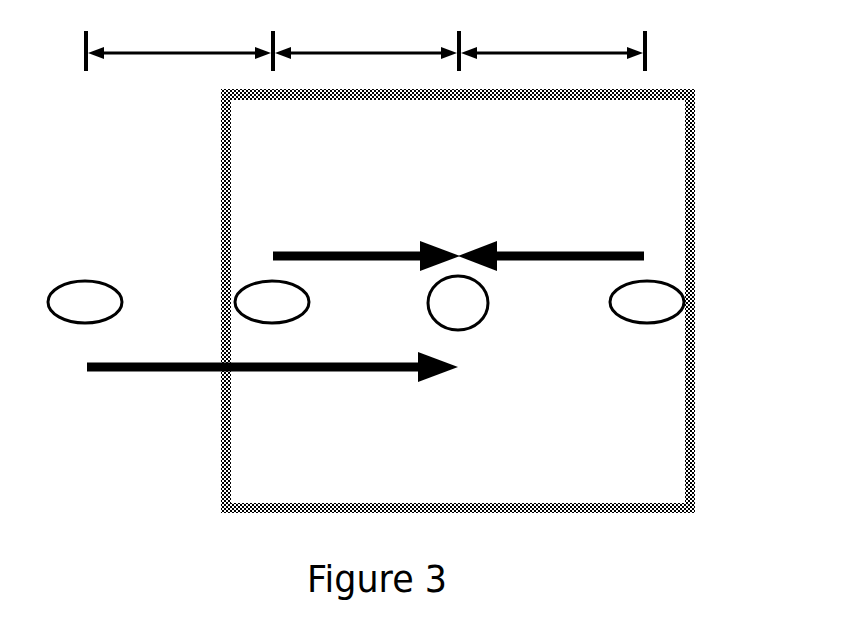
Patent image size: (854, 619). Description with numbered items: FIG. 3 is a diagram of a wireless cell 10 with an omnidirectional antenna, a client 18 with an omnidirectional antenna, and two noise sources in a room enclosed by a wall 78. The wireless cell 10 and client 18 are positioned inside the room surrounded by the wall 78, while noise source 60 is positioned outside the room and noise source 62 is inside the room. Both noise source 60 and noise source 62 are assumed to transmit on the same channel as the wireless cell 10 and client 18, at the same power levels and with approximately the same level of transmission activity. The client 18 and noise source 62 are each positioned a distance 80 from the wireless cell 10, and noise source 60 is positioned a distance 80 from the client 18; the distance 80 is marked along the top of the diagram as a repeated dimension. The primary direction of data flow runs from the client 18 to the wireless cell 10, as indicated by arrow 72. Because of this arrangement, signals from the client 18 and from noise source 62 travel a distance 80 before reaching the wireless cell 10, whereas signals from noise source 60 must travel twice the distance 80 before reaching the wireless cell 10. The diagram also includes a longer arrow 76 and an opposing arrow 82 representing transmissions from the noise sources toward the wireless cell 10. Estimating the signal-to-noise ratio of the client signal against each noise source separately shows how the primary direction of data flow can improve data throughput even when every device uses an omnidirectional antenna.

The wireless cell 10 is at (442, 314).
The client 18 is at (256, 313).
The noise source 60 is at (69, 313).
The noise source 62 is at (631, 313).
The arrow 72 is at (294, 250).
The main flow direction 76 is at (114, 373).
The wall 78 is at (695, 507).
The distance 80 is at (195, 52).
The second flow direction 82 is at (622, 250).